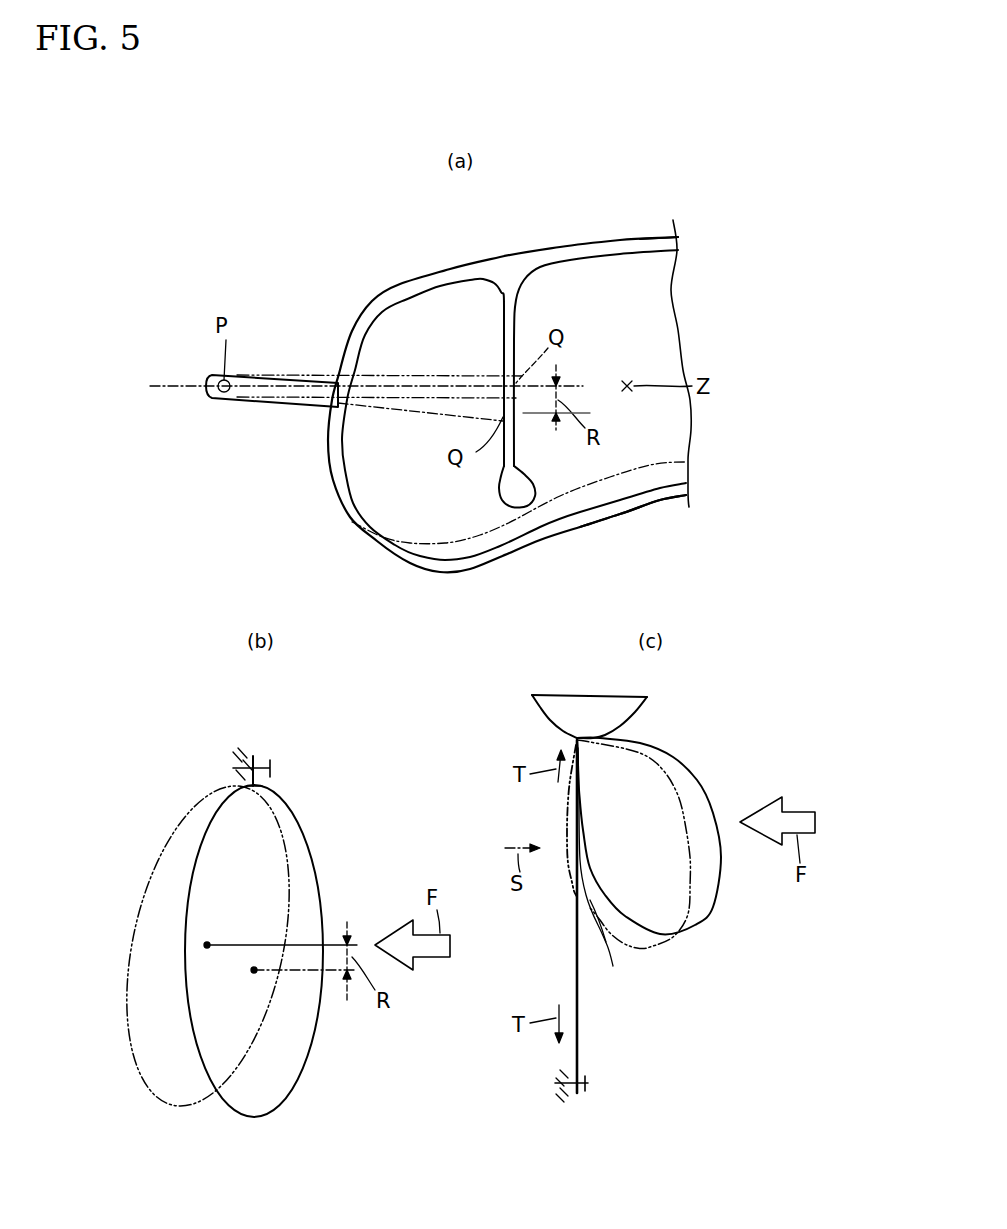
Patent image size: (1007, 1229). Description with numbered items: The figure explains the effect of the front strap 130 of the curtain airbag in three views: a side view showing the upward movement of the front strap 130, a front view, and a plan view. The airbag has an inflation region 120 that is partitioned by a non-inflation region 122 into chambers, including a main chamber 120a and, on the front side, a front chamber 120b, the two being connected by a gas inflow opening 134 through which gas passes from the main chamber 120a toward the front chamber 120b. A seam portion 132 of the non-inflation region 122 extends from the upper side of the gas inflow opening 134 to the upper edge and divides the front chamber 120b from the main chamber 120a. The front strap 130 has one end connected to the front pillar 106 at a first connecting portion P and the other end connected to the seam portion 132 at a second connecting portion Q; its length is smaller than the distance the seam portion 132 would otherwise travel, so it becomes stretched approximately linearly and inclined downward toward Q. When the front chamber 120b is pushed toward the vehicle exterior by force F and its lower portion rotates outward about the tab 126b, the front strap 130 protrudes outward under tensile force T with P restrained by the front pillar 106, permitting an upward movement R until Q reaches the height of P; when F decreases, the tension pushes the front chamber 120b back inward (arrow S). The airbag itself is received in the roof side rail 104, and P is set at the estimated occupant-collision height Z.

The roof side rail 104 is at (248, 752).
The front pillar 106 is at (572, 1097).
The inflation region 120 is at (576, 266).
The main chamber 120a is at (668, 300).
The front chamber 120b is at (380, 515).
The non-inflation region 122 is at (642, 238).
The tab 126b is at (262, 781).
The front strap 130 is at (378, 373).
The seam portion 132 is at (503, 344).
The gas inflow opening 134 is at (547, 524).